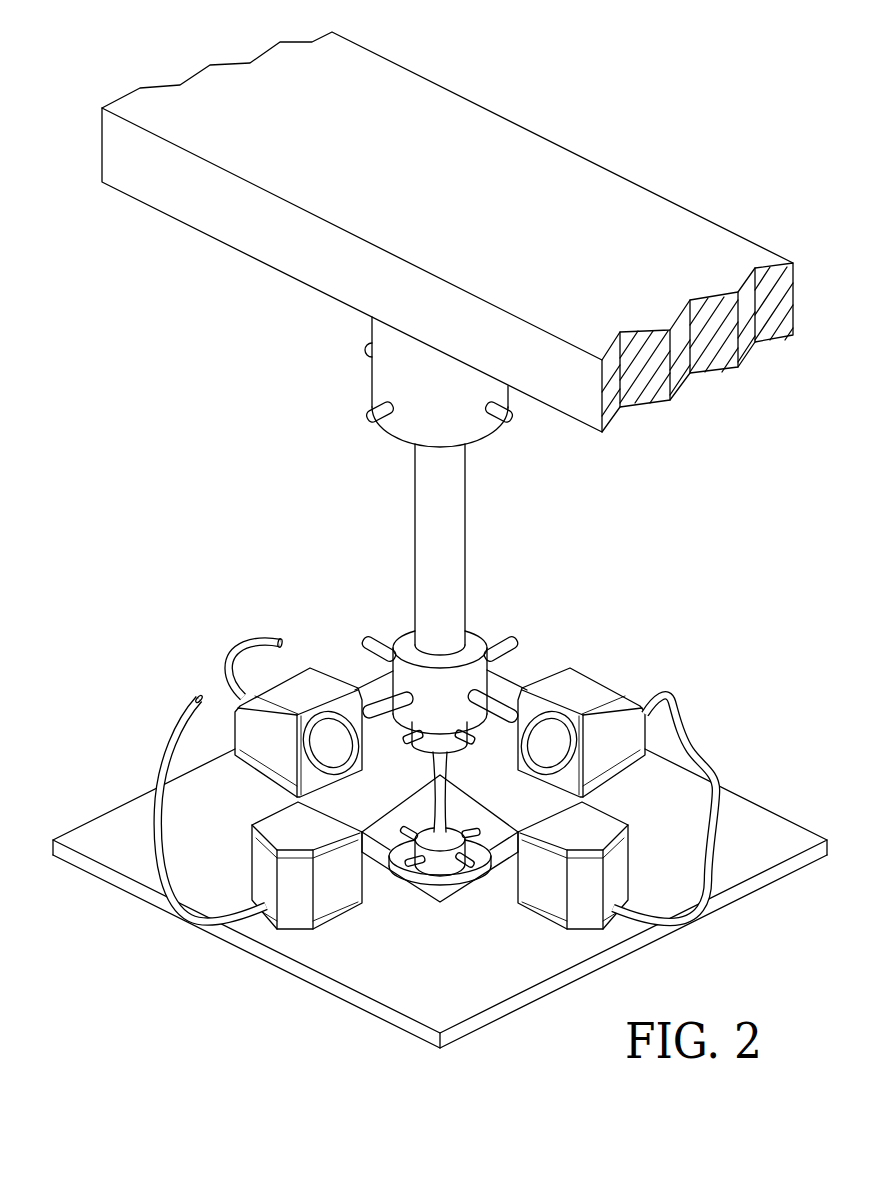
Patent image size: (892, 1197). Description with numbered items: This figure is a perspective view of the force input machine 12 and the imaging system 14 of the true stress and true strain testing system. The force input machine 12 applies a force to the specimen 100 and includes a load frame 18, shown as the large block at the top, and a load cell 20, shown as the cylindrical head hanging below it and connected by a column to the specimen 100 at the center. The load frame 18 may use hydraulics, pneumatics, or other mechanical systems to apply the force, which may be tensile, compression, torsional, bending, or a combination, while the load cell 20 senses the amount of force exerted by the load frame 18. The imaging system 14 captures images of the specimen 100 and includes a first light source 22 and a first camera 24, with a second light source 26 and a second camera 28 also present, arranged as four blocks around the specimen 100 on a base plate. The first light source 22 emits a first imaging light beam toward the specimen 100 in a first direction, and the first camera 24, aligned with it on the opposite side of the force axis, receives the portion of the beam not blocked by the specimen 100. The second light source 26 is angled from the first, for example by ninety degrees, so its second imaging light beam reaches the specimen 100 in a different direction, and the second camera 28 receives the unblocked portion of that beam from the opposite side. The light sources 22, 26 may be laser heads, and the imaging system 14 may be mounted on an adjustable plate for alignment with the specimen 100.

The force input machine 12 is at (435, 540).
The imaging system 14 is at (450, 771).
The load frame 18 is at (325, 265).
The load cell 20 is at (392, 380).
The first light source 22 is at (280, 827).
The first camera 24 is at (580, 687).
The second light source 26 is at (531, 881).
The second camera 28 is at (303, 687).
The specimen 100 is at (447, 812).